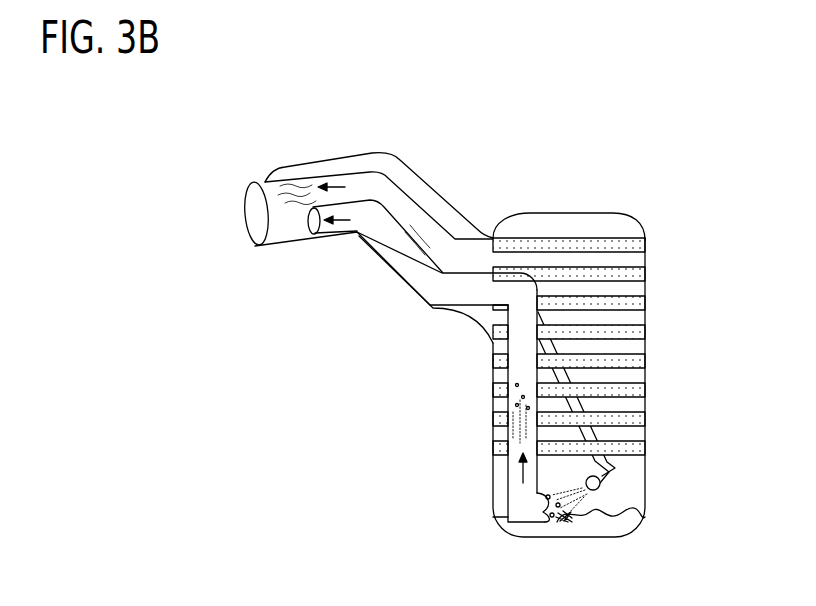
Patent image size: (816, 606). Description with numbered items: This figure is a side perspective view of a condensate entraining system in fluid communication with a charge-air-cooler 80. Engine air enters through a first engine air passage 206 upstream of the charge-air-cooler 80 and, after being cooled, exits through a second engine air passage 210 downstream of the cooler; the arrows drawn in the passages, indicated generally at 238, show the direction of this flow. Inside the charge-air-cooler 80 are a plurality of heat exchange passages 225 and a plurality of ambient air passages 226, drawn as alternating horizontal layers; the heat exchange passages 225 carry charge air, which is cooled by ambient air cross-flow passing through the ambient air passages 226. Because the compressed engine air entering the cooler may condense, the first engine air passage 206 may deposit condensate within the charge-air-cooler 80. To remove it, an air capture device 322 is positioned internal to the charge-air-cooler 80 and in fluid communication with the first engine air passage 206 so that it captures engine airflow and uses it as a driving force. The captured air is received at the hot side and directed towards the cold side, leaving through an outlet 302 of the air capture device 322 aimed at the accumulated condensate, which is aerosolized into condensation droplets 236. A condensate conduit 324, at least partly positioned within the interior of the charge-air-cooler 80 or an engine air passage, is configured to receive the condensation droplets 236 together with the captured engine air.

The charge-air-cooler 80 is at (588, 213).
The first engine air passage 206 is at (415, 169).
The second engine air passage 210 is at (318, 172).
The heat exchange passages 225 is at (650, 345).
The ambient air passages 226 is at (628, 268).
The condensation droplets 236 is at (570, 522).
The flow direction 238 is at (268, 160).
The outlet 302 is at (616, 490).
The air capture device 322 is at (598, 431).
The condensate conduit 324 is at (405, 348).